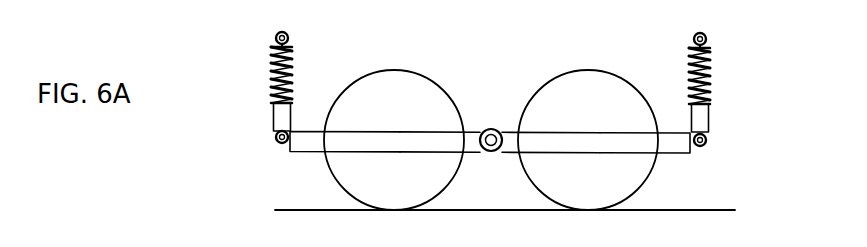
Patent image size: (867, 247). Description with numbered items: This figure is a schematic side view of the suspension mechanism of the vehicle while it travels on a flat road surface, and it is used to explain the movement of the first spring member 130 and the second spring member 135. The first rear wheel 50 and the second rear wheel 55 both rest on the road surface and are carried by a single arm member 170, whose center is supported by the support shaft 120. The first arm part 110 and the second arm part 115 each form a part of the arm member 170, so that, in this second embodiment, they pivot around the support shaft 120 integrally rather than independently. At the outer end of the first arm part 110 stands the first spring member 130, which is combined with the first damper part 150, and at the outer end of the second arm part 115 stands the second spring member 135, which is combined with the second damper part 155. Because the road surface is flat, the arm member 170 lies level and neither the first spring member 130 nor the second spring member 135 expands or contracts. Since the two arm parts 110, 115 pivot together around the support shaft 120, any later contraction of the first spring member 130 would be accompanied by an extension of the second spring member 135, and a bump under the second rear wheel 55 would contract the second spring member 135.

The first rear wheel 50 is at (591, 70).
The second rear wheel 55 is at (397, 69).
The first arm part 110 is at (677, 133).
The second arm part 115 is at (316, 131).
The support shaft 120 is at (489, 128).
The first spring member 130 is at (711, 74).
The second spring member 135 is at (270, 75).
The first damper part 150 is at (708, 39).
The second damper part 155 is at (275, 38).
The arm member 170 is at (509, 129).